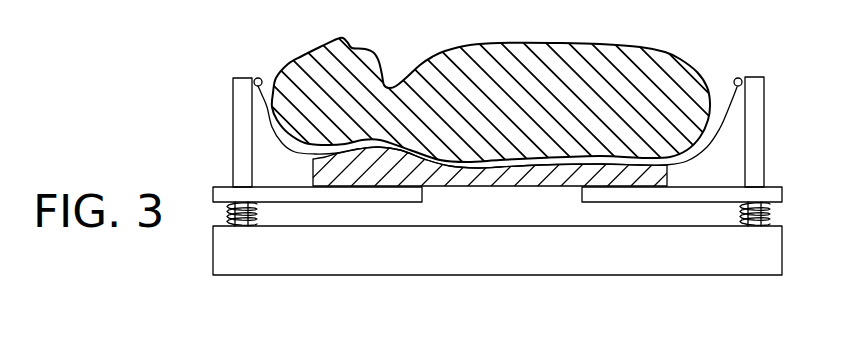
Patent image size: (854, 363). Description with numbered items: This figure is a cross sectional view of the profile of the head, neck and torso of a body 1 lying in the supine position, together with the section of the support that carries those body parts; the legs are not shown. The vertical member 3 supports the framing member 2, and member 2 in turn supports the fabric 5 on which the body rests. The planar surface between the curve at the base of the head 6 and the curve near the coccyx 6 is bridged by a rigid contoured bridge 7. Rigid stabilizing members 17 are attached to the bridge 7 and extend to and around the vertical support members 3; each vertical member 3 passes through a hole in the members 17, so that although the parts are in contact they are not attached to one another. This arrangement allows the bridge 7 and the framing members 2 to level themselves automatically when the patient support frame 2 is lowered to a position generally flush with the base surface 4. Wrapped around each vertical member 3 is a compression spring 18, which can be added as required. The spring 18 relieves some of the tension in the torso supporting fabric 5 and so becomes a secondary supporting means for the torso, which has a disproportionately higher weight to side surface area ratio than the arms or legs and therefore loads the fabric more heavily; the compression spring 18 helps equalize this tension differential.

The body (molded article / patient body form) 1 is at (528, 65).
The member 2 is at (260, 77).
The vertical member 3 is at (245, 92).
The base surface 4 is at (490, 237).
The fabric 5 is at (732, 110).
The curve 6 is at (293, 153).
The rigid contoured bridge 7 is at (502, 180).
The rigid stabilizing member 17 is at (352, 196).
The compression spring 18 is at (240, 224).